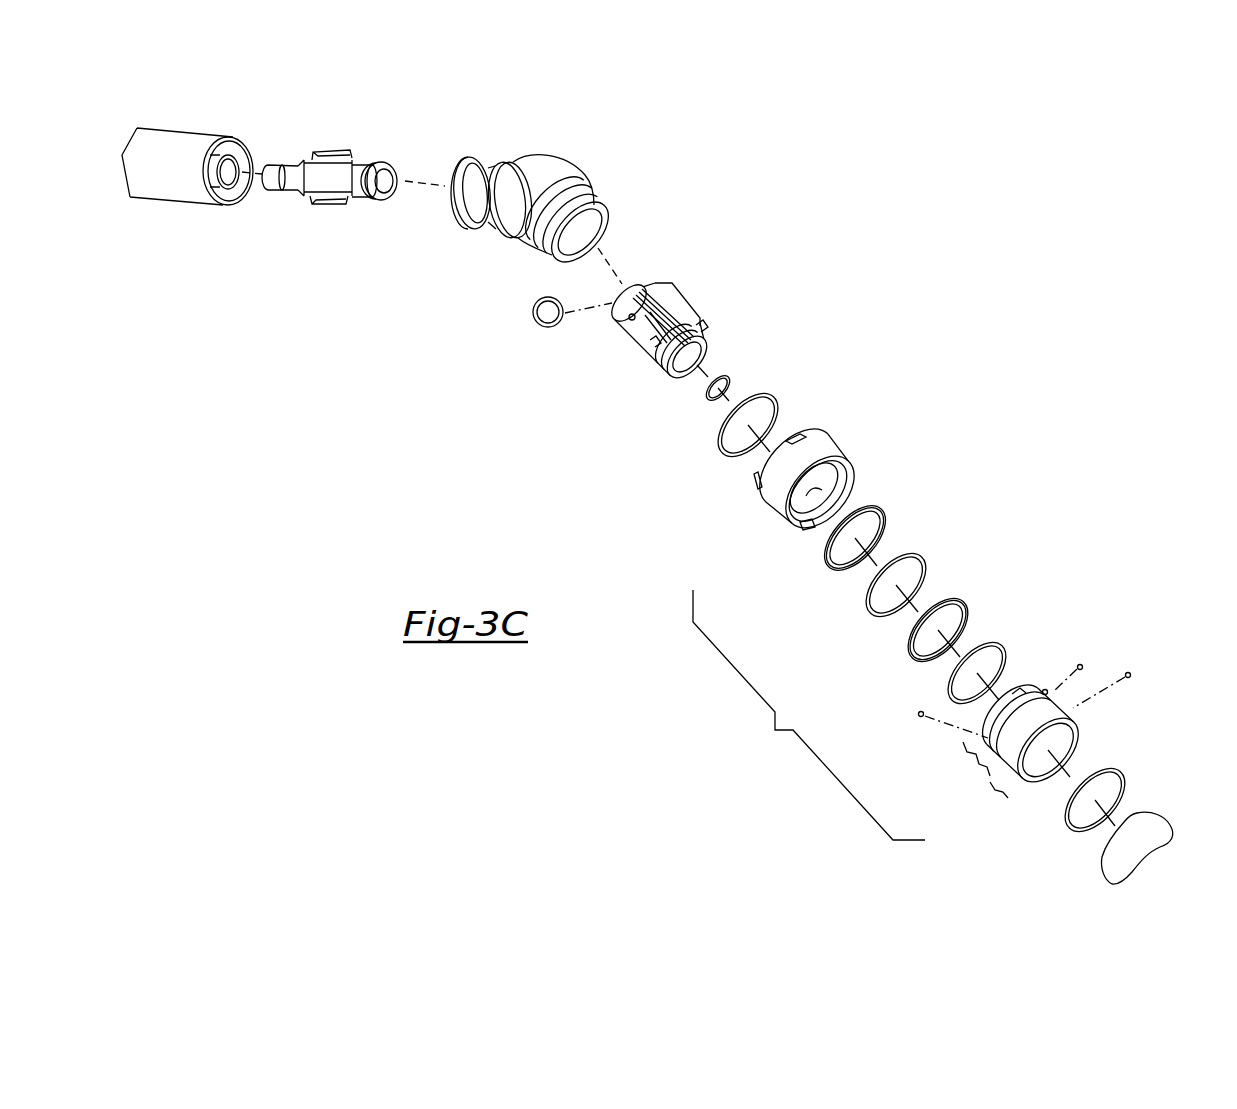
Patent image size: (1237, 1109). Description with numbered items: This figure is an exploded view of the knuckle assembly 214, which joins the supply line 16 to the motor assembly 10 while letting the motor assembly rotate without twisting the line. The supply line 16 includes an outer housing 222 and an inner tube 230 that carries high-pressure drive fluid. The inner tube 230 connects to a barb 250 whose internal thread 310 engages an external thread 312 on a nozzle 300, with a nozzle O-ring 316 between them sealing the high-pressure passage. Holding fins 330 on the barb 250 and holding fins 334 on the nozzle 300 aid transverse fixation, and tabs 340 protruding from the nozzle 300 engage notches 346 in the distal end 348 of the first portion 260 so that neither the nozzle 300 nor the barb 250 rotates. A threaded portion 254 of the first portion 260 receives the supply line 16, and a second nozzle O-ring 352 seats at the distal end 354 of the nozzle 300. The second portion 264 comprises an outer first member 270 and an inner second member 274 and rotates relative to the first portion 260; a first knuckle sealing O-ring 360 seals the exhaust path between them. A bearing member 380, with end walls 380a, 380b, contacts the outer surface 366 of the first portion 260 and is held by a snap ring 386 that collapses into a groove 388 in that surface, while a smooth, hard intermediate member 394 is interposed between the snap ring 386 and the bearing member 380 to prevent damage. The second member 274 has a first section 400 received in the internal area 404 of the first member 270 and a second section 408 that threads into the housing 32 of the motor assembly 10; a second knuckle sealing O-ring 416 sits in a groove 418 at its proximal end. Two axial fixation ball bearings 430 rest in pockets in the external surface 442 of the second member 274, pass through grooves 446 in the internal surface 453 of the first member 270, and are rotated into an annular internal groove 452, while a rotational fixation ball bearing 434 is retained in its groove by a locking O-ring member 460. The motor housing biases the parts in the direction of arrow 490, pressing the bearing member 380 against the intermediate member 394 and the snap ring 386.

The motor assembly 10 is at (1102, 880).
The supply line 16 is at (187, 163).
The housing 32 is at (1162, 832).
The knuckle assembly 214 is at (420, 410).
The outer housing 222 is at (185, 195).
The inner tube 230 is at (215, 188).
The barb 250 is at (363, 149).
The threaded portion 254 is at (506, 163).
The first portion 260 is at (555, 195).
The second portion 264 is at (809, 715).
The first member 270 is at (809, 458).
The second member 274 is at (1080, 717).
The nozzle 300 is at (672, 325).
The internal thread 310 is at (398, 178).
The external thread 312 is at (615, 320).
The nozzle O-ring 316 is at (540, 322).
The holding fins 330 is at (345, 150).
The holding fins 334 is at (690, 302).
The tabs 340 is at (705, 328).
The notches 346 is at (570, 262).
The distal end 348 is at (603, 220).
The second nozzle O-ring 352 is at (708, 400).
The distal end 354 is at (688, 380).
The first knuckle sealing O-ring 360 is at (727, 443).
The outer surface 366 is at (540, 230).
The bearing member 380 is at (866, 555).
The end wall 380a is at (836, 570).
The end wall 380b is at (835, 562).
The snap ring 386 is at (970, 600).
The groove 388 is at (596, 195).
The intermediate member 394 is at (930, 555).
The first section 400 is at (960, 760).
The internal area 404 is at (870, 541).
The second section 408 is at (983, 795).
The second knuckle sealing O-ring 416 is at (1010, 640).
The groove 418 is at (1018, 690).
The axial fixation ball bearings 430 is at (920, 712).
The rotational fixation locking ball bearing 434 is at (1083, 665).
The external surface 442 is at (1050, 692).
The grooves 446 is at (828, 470).
The internal groove 452 is at (800, 522).
The internal surface 453 is at (850, 490).
The locking O-ring member 460 is at (1060, 818).
The arrow 490 is at (1163, 822).